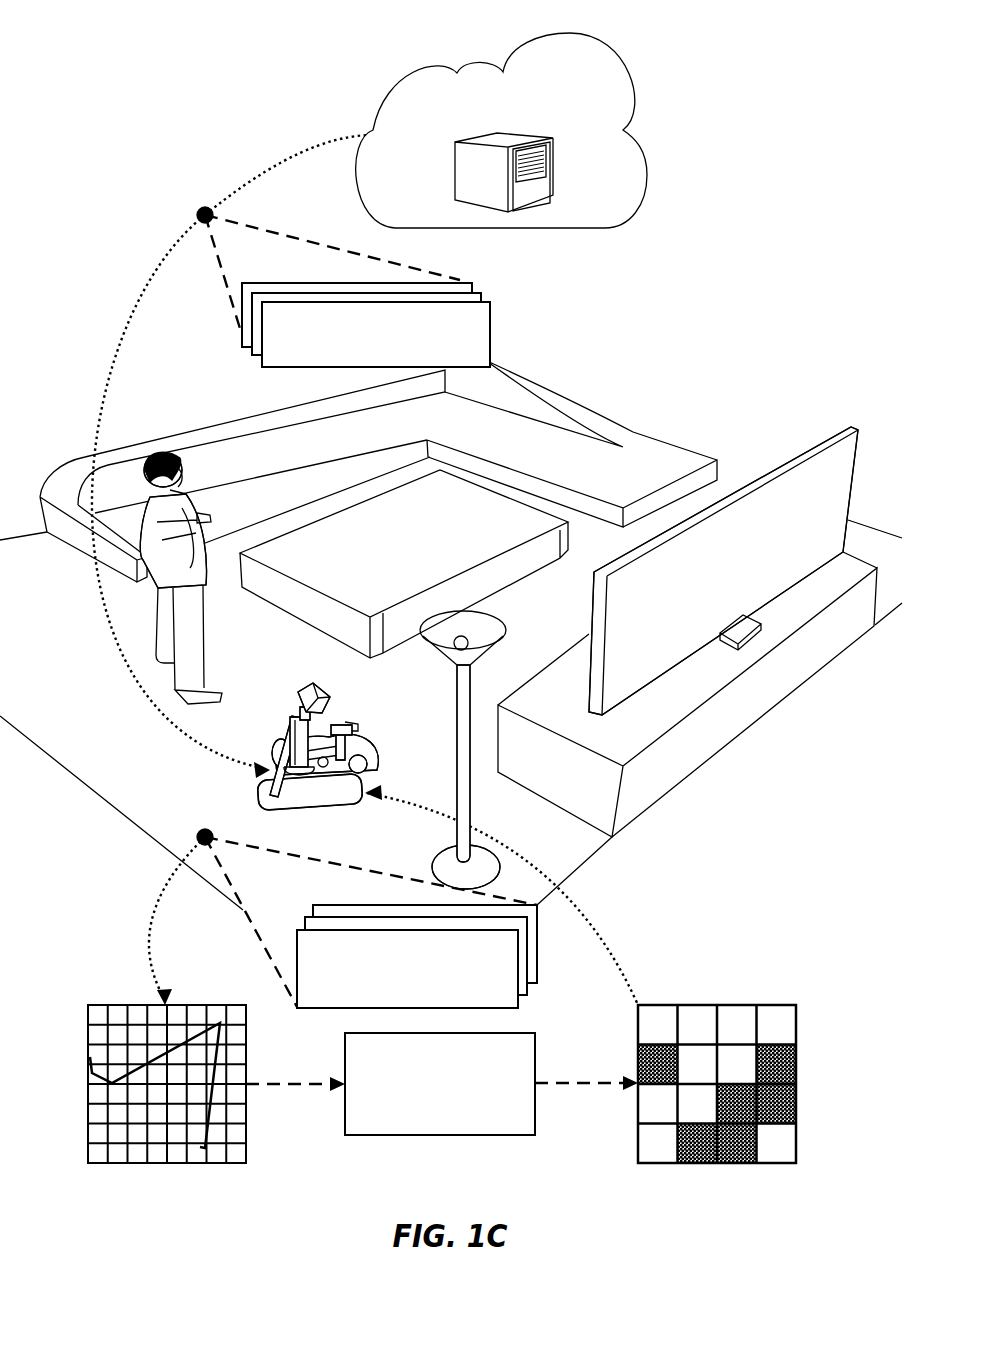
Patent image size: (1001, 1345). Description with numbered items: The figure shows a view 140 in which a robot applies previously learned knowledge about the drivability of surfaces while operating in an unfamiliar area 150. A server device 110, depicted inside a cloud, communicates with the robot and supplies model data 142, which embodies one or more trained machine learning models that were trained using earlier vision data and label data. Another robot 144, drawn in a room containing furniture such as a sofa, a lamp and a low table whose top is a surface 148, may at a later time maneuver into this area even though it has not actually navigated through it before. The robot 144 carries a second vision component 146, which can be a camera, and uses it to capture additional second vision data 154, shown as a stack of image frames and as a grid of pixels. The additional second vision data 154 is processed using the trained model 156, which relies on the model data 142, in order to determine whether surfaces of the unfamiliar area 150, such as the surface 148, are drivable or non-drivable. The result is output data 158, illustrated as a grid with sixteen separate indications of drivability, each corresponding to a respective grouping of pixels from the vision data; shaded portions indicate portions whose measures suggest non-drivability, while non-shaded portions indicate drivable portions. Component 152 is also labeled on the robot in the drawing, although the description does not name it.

The server device 110 is at (468, 186).
The view 140 is at (153, 78).
The model data 142 is at (361, 357).
The robot 144 is at (353, 745).
The second vision component 146 is at (322, 685).
The surface 148 is at (403, 552).
The unfamiliar area 150 is at (636, 390).
The additional vision sensor 152 is at (372, 786).
The additional second vision data 154 is at (394, 1000).
The trained model 156 is at (423, 1121).
The output data 158 is at (718, 988).